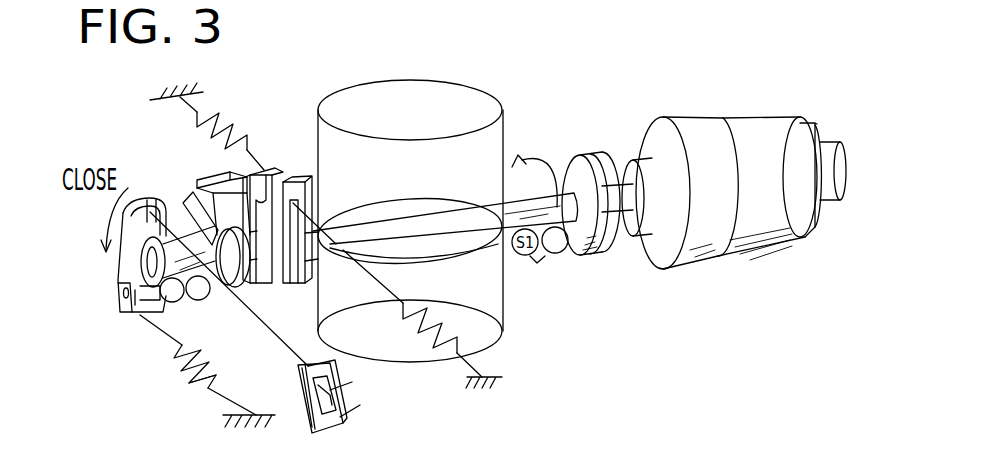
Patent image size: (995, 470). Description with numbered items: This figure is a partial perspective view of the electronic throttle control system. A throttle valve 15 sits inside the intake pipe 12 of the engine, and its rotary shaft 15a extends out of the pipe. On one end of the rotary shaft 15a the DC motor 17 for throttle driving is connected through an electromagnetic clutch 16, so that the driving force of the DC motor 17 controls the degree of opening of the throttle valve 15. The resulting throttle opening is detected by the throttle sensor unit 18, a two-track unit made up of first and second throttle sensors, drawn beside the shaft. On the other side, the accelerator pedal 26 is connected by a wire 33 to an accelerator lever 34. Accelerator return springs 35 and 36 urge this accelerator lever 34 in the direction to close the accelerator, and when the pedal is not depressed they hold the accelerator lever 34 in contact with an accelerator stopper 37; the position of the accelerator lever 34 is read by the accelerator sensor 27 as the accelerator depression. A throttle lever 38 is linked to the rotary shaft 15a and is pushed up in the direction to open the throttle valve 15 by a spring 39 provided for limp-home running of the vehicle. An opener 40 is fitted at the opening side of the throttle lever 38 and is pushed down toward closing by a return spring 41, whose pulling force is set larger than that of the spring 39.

The intake pipe 12 is at (506, 134).
The throttle valve 15 is at (480, 251).
The rotary shaft 15a is at (444, 213).
The electromagnetic clutch 16 is at (587, 152).
The DC motor 17 is at (720, 120).
The throttle sensor unit 18 is at (560, 254).
The accelerator pedal 26 is at (297, 384).
The accelerator sensor 27 is at (181, 302).
The wire 33 is at (260, 320).
The accelerator lever 34 is at (186, 200).
The accelerator return spring 35 is at (168, 366).
The accelerator return spring 36 is at (207, 358).
The accelerator stopper 37 is at (203, 177).
The throttle lever 38 is at (287, 165).
The spring 39 is at (423, 340).
The opener 40 is at (270, 168).
The return spring 41 is at (222, 135).